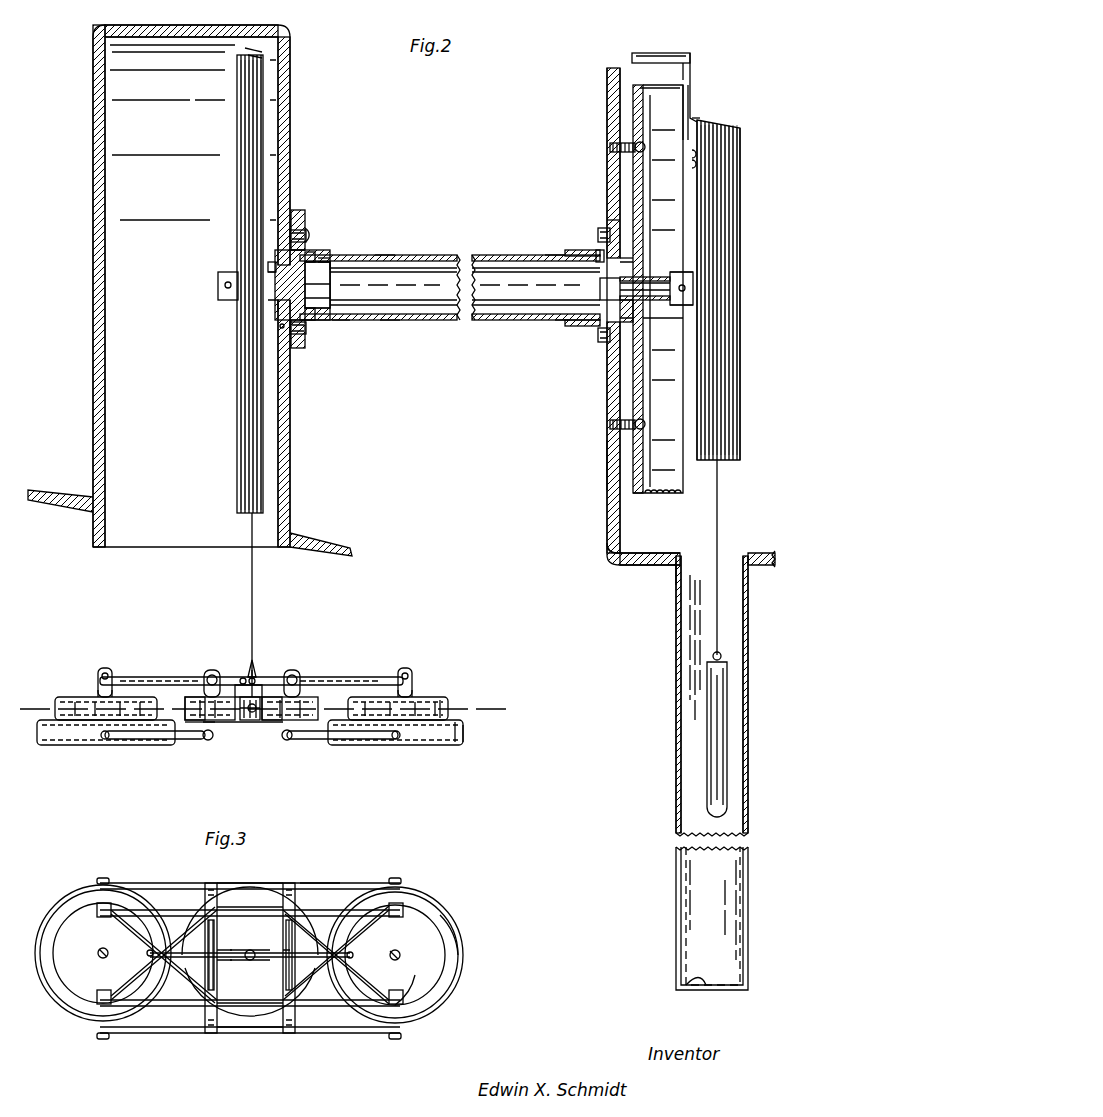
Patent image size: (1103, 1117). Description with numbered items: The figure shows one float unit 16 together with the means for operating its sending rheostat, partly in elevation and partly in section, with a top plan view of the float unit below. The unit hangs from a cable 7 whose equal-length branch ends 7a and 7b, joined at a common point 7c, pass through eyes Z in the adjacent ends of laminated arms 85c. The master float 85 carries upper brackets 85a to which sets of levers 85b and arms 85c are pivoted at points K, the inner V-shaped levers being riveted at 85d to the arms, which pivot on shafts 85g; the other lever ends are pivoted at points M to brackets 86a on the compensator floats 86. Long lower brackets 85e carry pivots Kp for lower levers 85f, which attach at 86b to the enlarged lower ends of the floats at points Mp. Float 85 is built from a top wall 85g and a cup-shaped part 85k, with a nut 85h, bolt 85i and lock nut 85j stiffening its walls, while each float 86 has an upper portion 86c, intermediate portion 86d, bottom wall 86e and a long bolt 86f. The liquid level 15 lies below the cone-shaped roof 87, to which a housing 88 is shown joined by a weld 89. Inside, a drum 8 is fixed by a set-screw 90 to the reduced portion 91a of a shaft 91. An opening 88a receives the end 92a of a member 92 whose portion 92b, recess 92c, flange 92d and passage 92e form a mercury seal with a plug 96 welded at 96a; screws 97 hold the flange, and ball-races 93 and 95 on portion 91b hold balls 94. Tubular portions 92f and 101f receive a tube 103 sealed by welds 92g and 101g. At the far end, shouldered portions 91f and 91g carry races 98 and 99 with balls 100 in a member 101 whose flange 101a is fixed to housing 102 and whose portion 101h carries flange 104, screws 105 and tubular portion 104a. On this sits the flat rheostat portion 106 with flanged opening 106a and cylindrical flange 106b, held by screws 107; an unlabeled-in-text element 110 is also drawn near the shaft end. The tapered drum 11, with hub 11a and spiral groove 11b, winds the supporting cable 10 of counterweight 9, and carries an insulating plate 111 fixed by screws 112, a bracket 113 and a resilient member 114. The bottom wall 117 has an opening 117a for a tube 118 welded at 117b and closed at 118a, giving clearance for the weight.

In FIG. 2, the cable 7 is at (262, 55).
In FIG. 2, the branch end portion of cable 7a is at (252, 670).
In FIG. 2, the branch end portion of cable 7b is at (256, 680).
In FIG. 2, the common point of connection 7c is at (252, 675).
In FIG. 2, the drum 8 is at (237, 452).
In FIG. 2, the counterweight 9 is at (715, 718).
In FIG. 2, the supporting cable 10 is at (720, 120).
In FIG. 2, the tapered drum 11 is at (740, 140).
In FIG. 2, the hub portion 11a is at (690, 288).
In FIG. 2, the spiral groove 11b is at (700, 120).
In FIG. 2, the liquid level line 15 is at (279, 714).
In FIG. 2, the float unit 16 is at (258, 682).
In FIG. 3, the float unit 16 is at (318, 883).
In FIG. 2, the intermediate float 85 is at (248, 722).
In FIG. 3, the intermediate float 85 is at (305, 905).
In FIG. 2, the brackets 85a is at (205, 690).
In FIG. 3, the brackets 85a is at (285, 950).
In FIG. 2, the sets of levers 85b is at (130, 680).
In FIG. 3, the sets of levers 85b is at (172, 910).
In FIG. 2, the arms 85c is at (240, 680).
In FIG. 3, the arms 85c is at (222, 905).
In FIG. 3, the rivets 85d is at (190, 1010).
In FIG. 2, the brackets 85e is at (215, 728).
In FIG. 3, the brackets 85e is at (210, 1033).
In FIG. 2, the sets of levers 85f is at (195, 740).
In FIG. 3, the sets of levers 85f is at (140, 883).
In FIG. 2, the top wall 85g is at (205, 722).
In FIG. 3, the top wall 85g is at (232, 950).
In FIG. 2, the nut 85h is at (252, 722).
In FIG. 2, the bolt 85i is at (195, 700).
In FIG. 3, the bolt 85i is at (250, 905).
In FIG. 2, the second nut 85j is at (270, 700).
In FIG. 2, the cup-shaped member 85k is at (200, 695).
In FIG. 2, the compensator floats 86 is at (55, 705).
In FIG. 3, the compensator floats 86 is at (249, 954).
In FIG. 2, the brackets 86a is at (100, 690).
In FIG. 3, the brackets 86a is at (98, 905).
In FIG. 2, the pivot attachment points 86b is at (105, 745).
In FIG. 3, the pivot attachment points 86b is at (103, 880).
In FIG. 2, the upper portion 86c is at (448, 710).
In FIG. 3, the upper portion 86c is at (425, 978).
In FIG. 2, the intermediate portion 86d is at (465, 735).
In FIG. 3, the intermediate portion 86d is at (445, 920).
In FIG. 2, the bottom wall portion 86e is at (462, 750).
In FIG. 3, the bolts 86f is at (98, 950).
In FIG. 2, the roof 87 is at (58, 497).
In FIG. 2, the housing 88 is at (93, 345).
In FIG. 2, the opening 88a is at (278, 326).
In FIG. 2, the peripheral weld 89 is at (298, 540).
In FIG. 2, the set-screw 90 is at (225, 285).
In FIG. 2, the shaft 91 is at (410, 270).
In FIG. 2, the reduced end portion 91a is at (278, 304).
In FIG. 2, the shaft portion 91b is at (385, 255).
In FIG. 2, the shouldered portion 91f is at (600, 288).
In FIG. 2, the shouldered portion 91g is at (650, 277).
In FIG. 2, the metal member 92 is at (318, 258).
In FIG. 2, the end portion 92a is at (306, 330).
In FIG. 2, the portion of member 92 92b is at (318, 322).
In FIG. 2, the cylindrical recess 92c is at (312, 252).
In FIG. 2, the flange 92d is at (306, 238).
In FIG. 2, the drilled passage 92e is at (298, 212).
In FIG. 2, the tubular portion 92f is at (342, 320).
In FIG. 2, the peripheral weld 92g is at (395, 321).
In FIG. 2, the ball-race member 93 is at (325, 256).
In FIG. 2, the ball-bearings 94 is at (326, 262).
In FIG. 2, the ball-race member 95 is at (322, 290).
In FIG. 2, the plug 96 is at (278, 272).
In FIG. 2, the peripheral weld 96a is at (275, 262).
In FIG. 2, the screws 97 is at (302, 248).
In FIG. 2, the ball-race member 98 is at (560, 322).
In FIG. 2, the ball-race member 99 is at (582, 323).
In FIG. 2, the ball-bearings 100 is at (640, 310).
In FIG. 2, the metal member 101 is at (606, 328).
In FIG. 2, the flange 101a is at (607, 225).
In FIG. 2, the tubular portion 101f is at (575, 256).
In FIG. 2, the peripheral weld 101g is at (560, 255).
In FIG. 2, the portion of member 101 101h is at (600, 256).
In FIG. 2, the housing 102 is at (607, 465).
In FIG. 2, the tube 103 is at (462, 321).
In FIG. 2, the flange 104 is at (640, 215).
In FIG. 2, the tubular portion 104a is at (690, 262).
In FIG. 2, the screws 105 is at (638, 245).
In FIG. 2, the flat circular portion 106 is at (643, 395).
In FIG. 2, the flanged opening 106a is at (685, 320).
In FIG. 2, the cylindrical flange 106b is at (645, 95).
In FIG. 2, the screws 107 is at (620, 425).
In FIG. 2, the terminal 110 is at (690, 300).
In FIG. 2, the insulating plate 111 is at (690, 128).
In FIG. 2, the screws or bolts 112 is at (700, 160).
In FIG. 2, the metal bracket 113 is at (692, 65).
In FIG. 2, the resilient metal member 114 is at (635, 60).
In FIG. 2, the bottom wall 117 is at (640, 562).
In FIG. 2, the opening 117a is at (752, 556).
In FIG. 2, the peripheral weld 117b is at (676, 575).
In FIG. 2, the tube 118 is at (676, 790).
In FIG. 2, the closed lower end 118a is at (690, 975).
In FIG. 2, the pivot points K is at (212, 680).
In FIG. 2, the pivot points Kp is at (210, 738).
In FIG. 2, the pivot points M is at (100, 675).
In FIG. 2, the pivot points Mp is at (100, 738).
In FIG. 2, the eyes Z is at (250, 680).